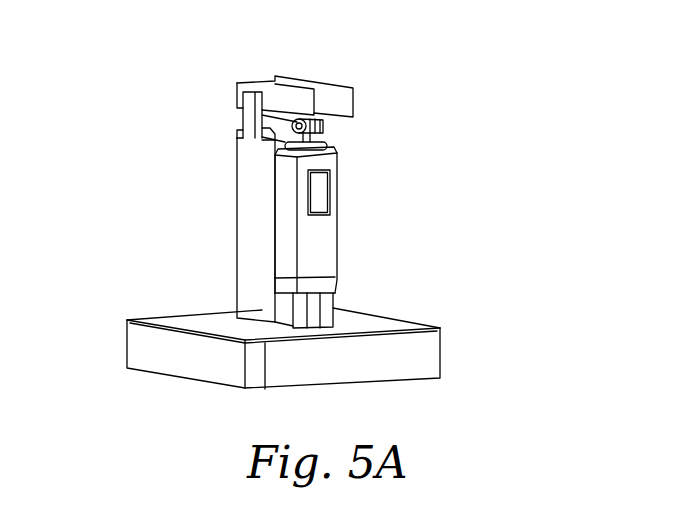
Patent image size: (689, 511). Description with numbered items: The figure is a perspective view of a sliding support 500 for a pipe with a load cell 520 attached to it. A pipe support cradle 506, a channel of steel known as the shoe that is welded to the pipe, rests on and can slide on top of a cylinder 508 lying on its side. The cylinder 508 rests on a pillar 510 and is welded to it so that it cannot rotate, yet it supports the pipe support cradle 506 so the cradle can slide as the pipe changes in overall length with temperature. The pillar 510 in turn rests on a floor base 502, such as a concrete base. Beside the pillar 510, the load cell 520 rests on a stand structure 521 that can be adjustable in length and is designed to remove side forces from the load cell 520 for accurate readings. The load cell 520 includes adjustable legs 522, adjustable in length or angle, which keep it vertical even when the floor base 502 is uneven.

The sliding support 500 is at (474, 124).
The floor base 502 is at (147, 354).
The pipe support cradle 506 is at (243, 93).
The cylinder 508 is at (262, 138).
The pillar 510 is at (267, 225).
The load cell 520 is at (331, 149).
The stand structure 521 is at (322, 238).
The adjustable legs 522 is at (330, 307).